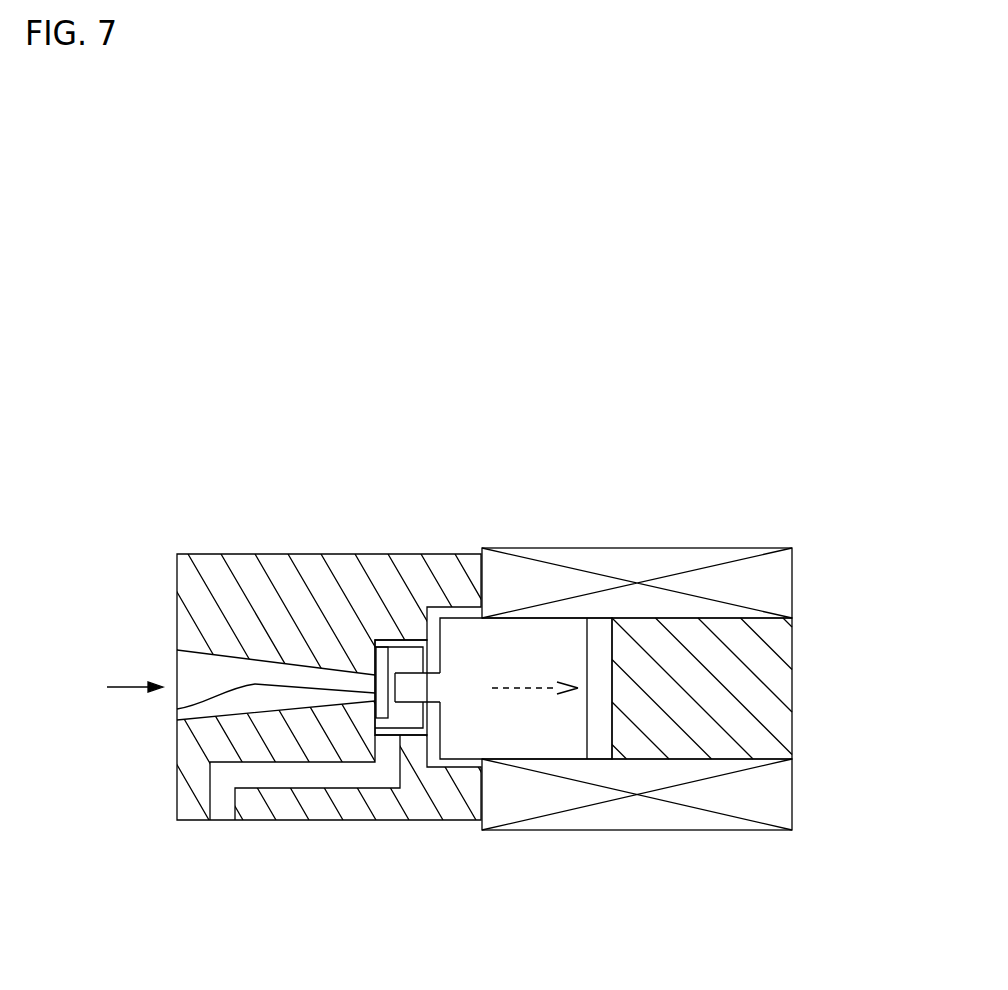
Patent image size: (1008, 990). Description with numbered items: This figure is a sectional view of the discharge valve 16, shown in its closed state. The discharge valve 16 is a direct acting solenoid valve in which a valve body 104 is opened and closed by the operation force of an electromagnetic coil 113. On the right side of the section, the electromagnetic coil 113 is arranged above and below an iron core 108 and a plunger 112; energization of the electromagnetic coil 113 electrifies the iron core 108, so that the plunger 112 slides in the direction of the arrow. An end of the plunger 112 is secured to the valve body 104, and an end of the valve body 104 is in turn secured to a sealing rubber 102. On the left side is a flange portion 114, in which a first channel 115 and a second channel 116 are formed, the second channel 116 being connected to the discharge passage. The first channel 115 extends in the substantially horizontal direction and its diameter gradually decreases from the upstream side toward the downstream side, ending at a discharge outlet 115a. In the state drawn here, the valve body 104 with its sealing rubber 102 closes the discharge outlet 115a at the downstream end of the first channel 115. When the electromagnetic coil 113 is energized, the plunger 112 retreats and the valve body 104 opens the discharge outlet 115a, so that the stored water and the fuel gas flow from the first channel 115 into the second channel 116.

The discharge valve 16 is at (676, 488).
The sealing rubber 102 is at (387, 662).
The valve body 104 is at (407, 657).
The iron core 108 is at (767, 688).
The plunger 112 is at (540, 647).
The electromagnetic coil 113 is at (778, 583).
The flange portion 114 is at (282, 573).
The first channel 115 is at (197, 673).
The discharge outlet 115a is at (177, 710).
The second channel 116 is at (288, 777).